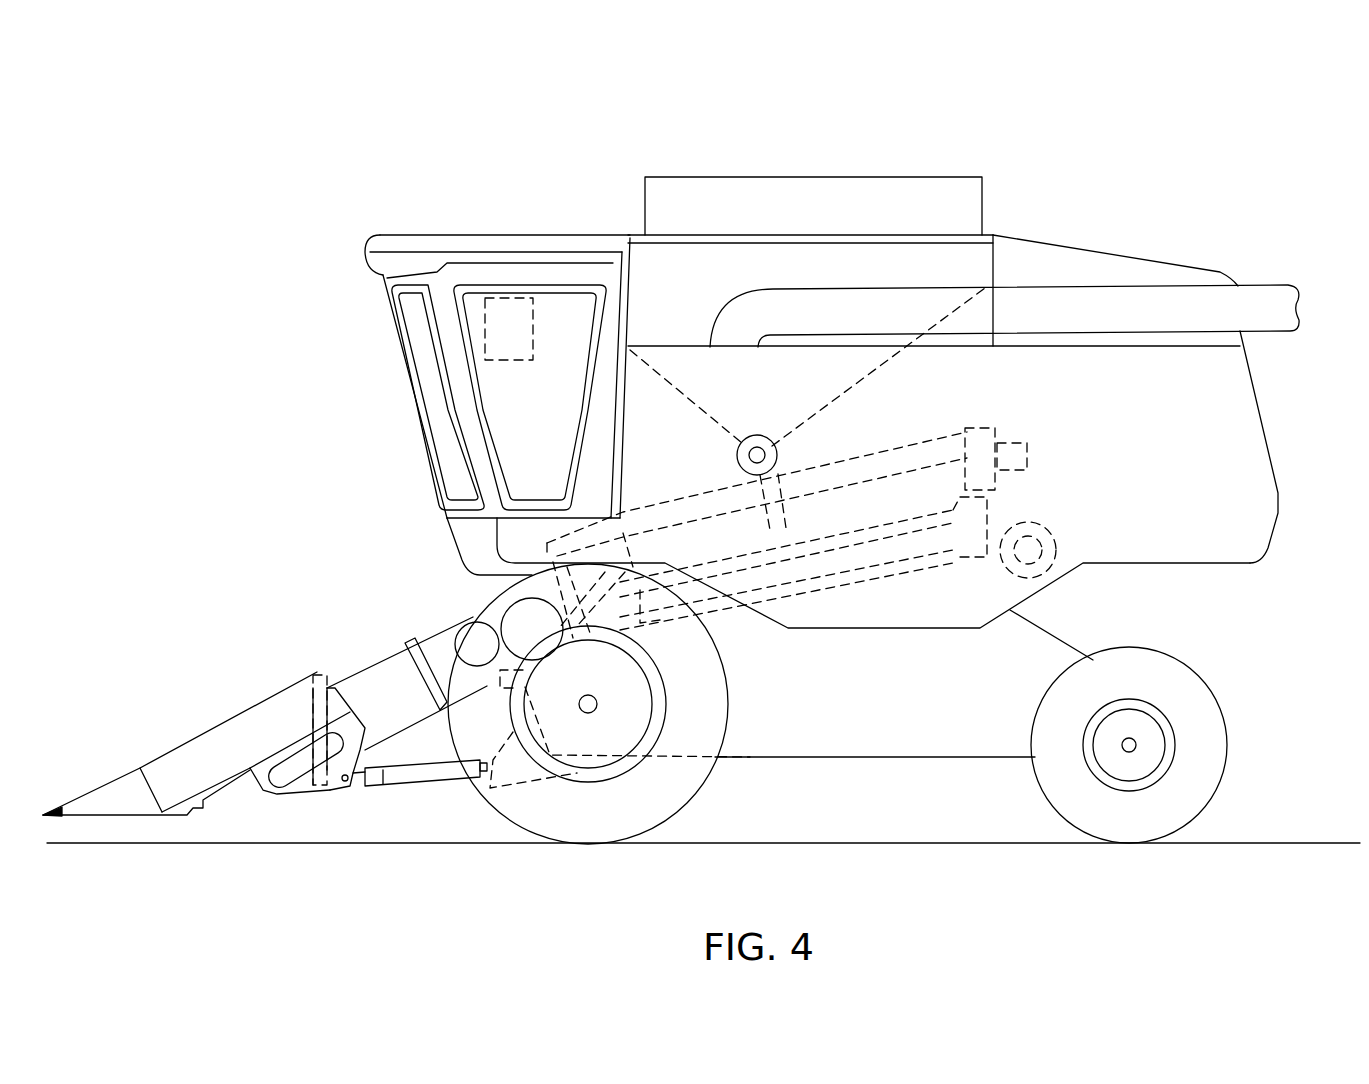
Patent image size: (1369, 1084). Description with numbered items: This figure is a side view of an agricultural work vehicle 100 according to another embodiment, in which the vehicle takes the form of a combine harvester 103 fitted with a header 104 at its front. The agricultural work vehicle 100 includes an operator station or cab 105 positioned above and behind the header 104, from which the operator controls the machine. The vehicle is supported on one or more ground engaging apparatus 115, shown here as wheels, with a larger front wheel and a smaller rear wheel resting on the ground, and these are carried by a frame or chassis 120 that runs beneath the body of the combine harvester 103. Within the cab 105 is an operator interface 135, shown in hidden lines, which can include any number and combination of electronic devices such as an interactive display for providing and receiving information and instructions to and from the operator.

The agricultural work vehicle 100 is at (1073, 98).
The combine harvester 103 is at (1110, 217).
The header 104 is at (217, 637).
The operator station or cab 105 is at (443, 245).
The ground engaging apparatus 115 is at (642, 795).
The frame or chassis 120 is at (1027, 638).
The operator interface 135 is at (513, 310).